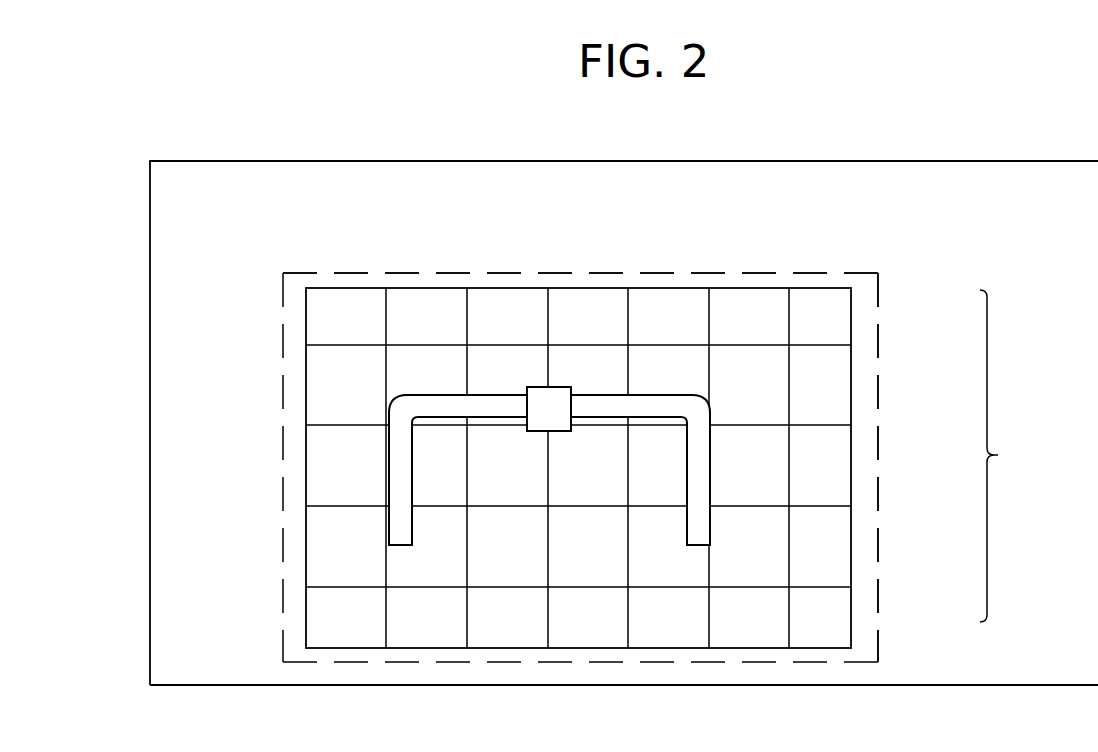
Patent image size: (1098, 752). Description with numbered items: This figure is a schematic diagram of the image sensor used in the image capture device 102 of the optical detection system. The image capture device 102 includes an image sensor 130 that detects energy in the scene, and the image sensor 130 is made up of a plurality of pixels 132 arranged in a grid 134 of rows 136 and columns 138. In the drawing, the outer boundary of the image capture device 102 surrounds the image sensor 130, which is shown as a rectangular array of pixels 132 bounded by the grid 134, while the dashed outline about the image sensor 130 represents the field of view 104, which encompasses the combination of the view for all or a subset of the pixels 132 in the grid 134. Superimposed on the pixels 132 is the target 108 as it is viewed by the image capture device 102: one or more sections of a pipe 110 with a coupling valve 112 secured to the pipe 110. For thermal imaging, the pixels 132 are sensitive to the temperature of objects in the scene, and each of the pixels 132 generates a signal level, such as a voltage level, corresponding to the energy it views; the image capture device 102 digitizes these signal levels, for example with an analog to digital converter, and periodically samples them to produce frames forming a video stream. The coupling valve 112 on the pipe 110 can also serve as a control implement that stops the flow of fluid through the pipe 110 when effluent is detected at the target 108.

The image capture device 102 is at (948, 145).
The field of view 104 is at (877, 543).
The target 108 is at (402, 552).
The pipe 110 is at (487, 393).
The coupling valve 112 is at (558, 387).
The image sensor 130 is at (607, 287).
The pixels 132 is at (330, 298).
The grid 134 is at (1010, 456).
The rows 136 is at (878, 338).
The columns 138 is at (814, 272).